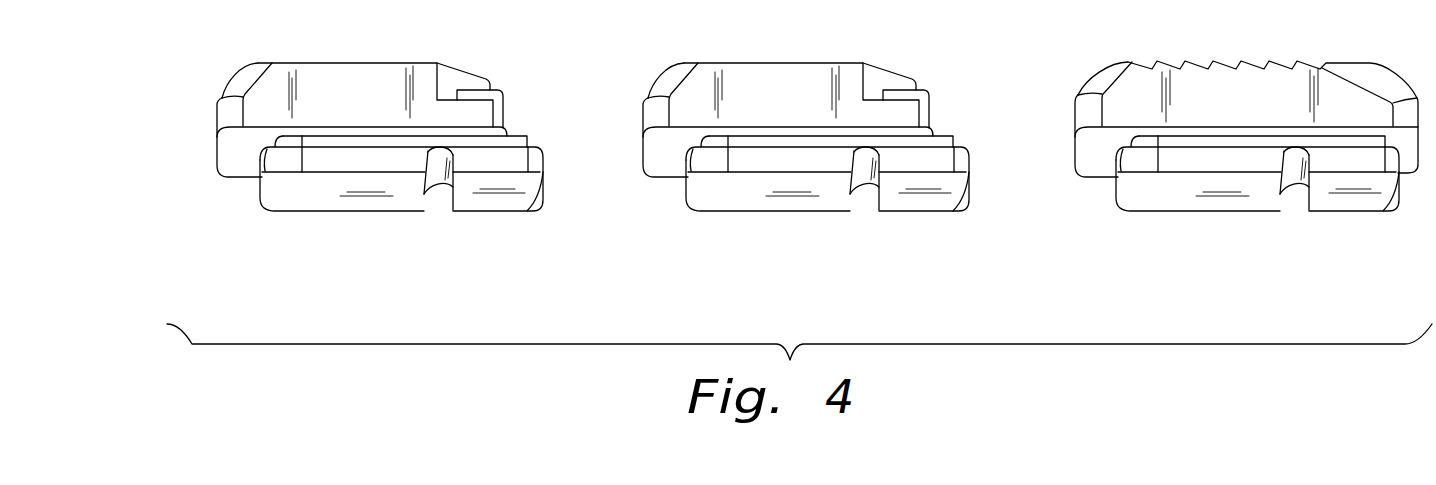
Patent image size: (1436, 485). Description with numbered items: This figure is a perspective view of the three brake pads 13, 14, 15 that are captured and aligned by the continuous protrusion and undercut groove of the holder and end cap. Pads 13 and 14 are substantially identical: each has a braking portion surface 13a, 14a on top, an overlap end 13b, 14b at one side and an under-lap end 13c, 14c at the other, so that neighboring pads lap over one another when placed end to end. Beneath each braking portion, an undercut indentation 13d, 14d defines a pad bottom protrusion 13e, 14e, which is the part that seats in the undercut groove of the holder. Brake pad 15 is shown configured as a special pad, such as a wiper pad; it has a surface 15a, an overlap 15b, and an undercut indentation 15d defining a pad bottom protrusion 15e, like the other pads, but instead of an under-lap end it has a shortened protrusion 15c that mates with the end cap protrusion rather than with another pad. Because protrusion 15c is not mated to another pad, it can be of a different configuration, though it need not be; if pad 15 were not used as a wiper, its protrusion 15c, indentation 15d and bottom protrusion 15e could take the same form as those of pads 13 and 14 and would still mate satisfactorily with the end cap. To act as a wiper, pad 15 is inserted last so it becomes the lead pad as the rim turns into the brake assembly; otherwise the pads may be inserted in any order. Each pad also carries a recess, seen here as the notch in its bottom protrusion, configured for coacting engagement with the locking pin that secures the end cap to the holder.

The brake pad 13 is at (358, 147).
The braking portion surface 13a is at (352, 63).
The overlap end 13b is at (247, 163).
The under-lap end 13c is at (529, 205).
The undercut indentation 13d is at (373, 137).
The pad bottom protrusion 13e is at (320, 162).
The brake pad 14 is at (784, 147).
The braking portion surface 14a is at (778, 63).
The overlap end 14b is at (673, 163).
The under-lap end 14c is at (955, 205).
The undercut indentation 14d is at (799, 137).
The pad bottom protrusion 14e is at (746, 162).
The brake pad 15 is at (1221, 147).
The surface 15a is at (1203, 63).
The overlap 15b is at (1103, 163).
The shortened protrusion 15c is at (1385, 205).
The undercut indentation 15d is at (1229, 137).
The pad bottom protrusion 15e is at (1176, 162).